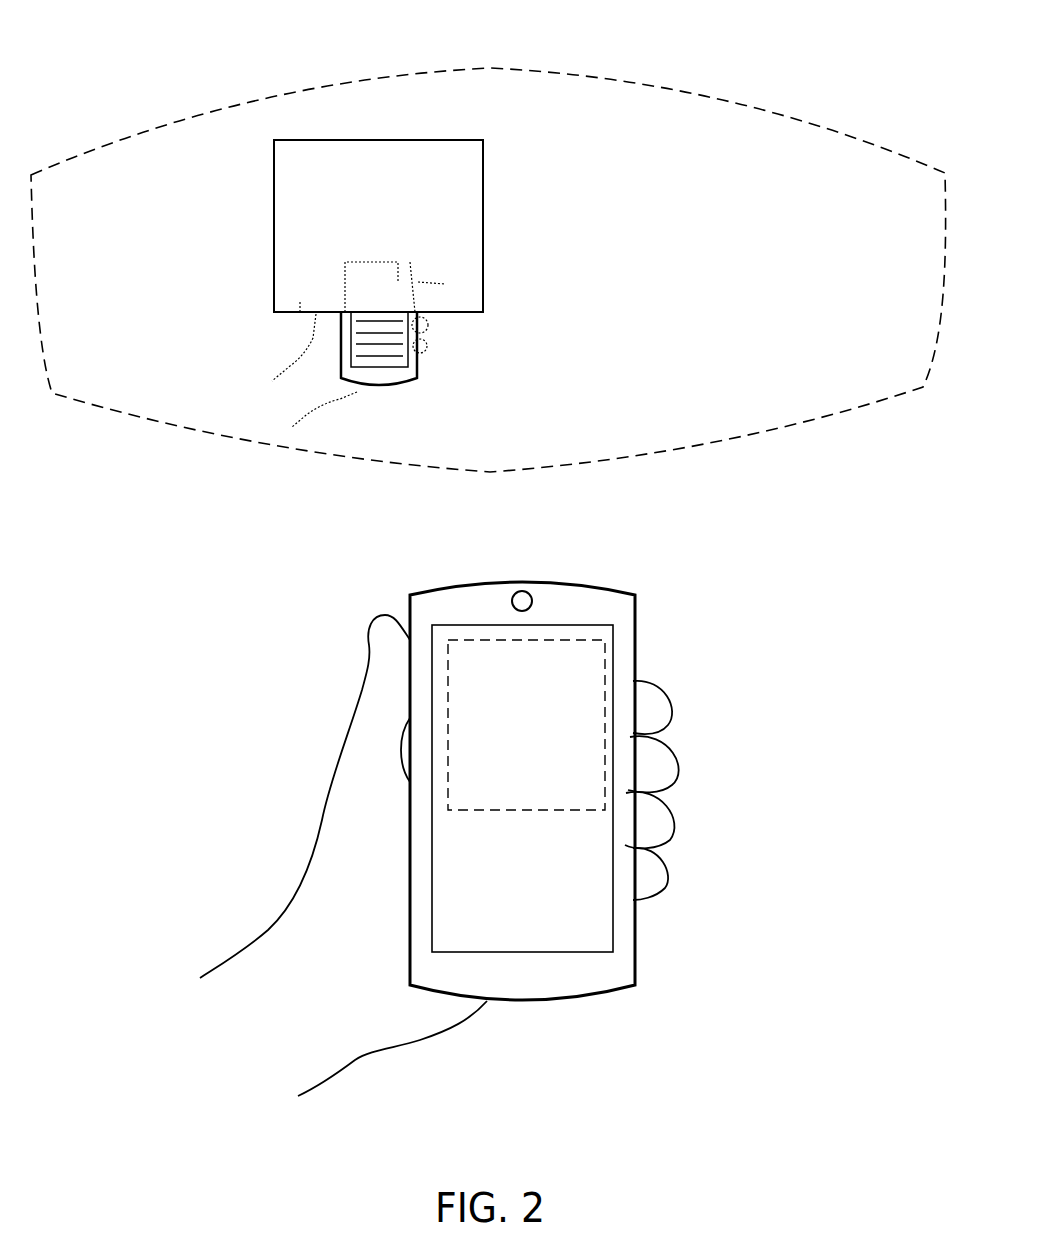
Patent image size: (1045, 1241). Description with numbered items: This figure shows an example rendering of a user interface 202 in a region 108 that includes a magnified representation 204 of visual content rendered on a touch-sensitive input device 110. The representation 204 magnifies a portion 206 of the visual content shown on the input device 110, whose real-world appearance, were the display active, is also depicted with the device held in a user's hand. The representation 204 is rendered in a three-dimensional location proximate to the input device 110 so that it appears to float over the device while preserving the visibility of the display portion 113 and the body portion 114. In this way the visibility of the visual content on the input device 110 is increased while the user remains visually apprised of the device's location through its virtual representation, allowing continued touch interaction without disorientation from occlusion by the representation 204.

The region 108 is at (497, 68).
The magnified representation 204 is at (483, 158).
The user interface 202 is at (250, 300).
The display portion 113 is at (393, 366).
The body portion 114 is at (418, 372).
The portion of the visual content 206 is at (573, 640).
The touch-sensitive input device 110 is at (672, 627).